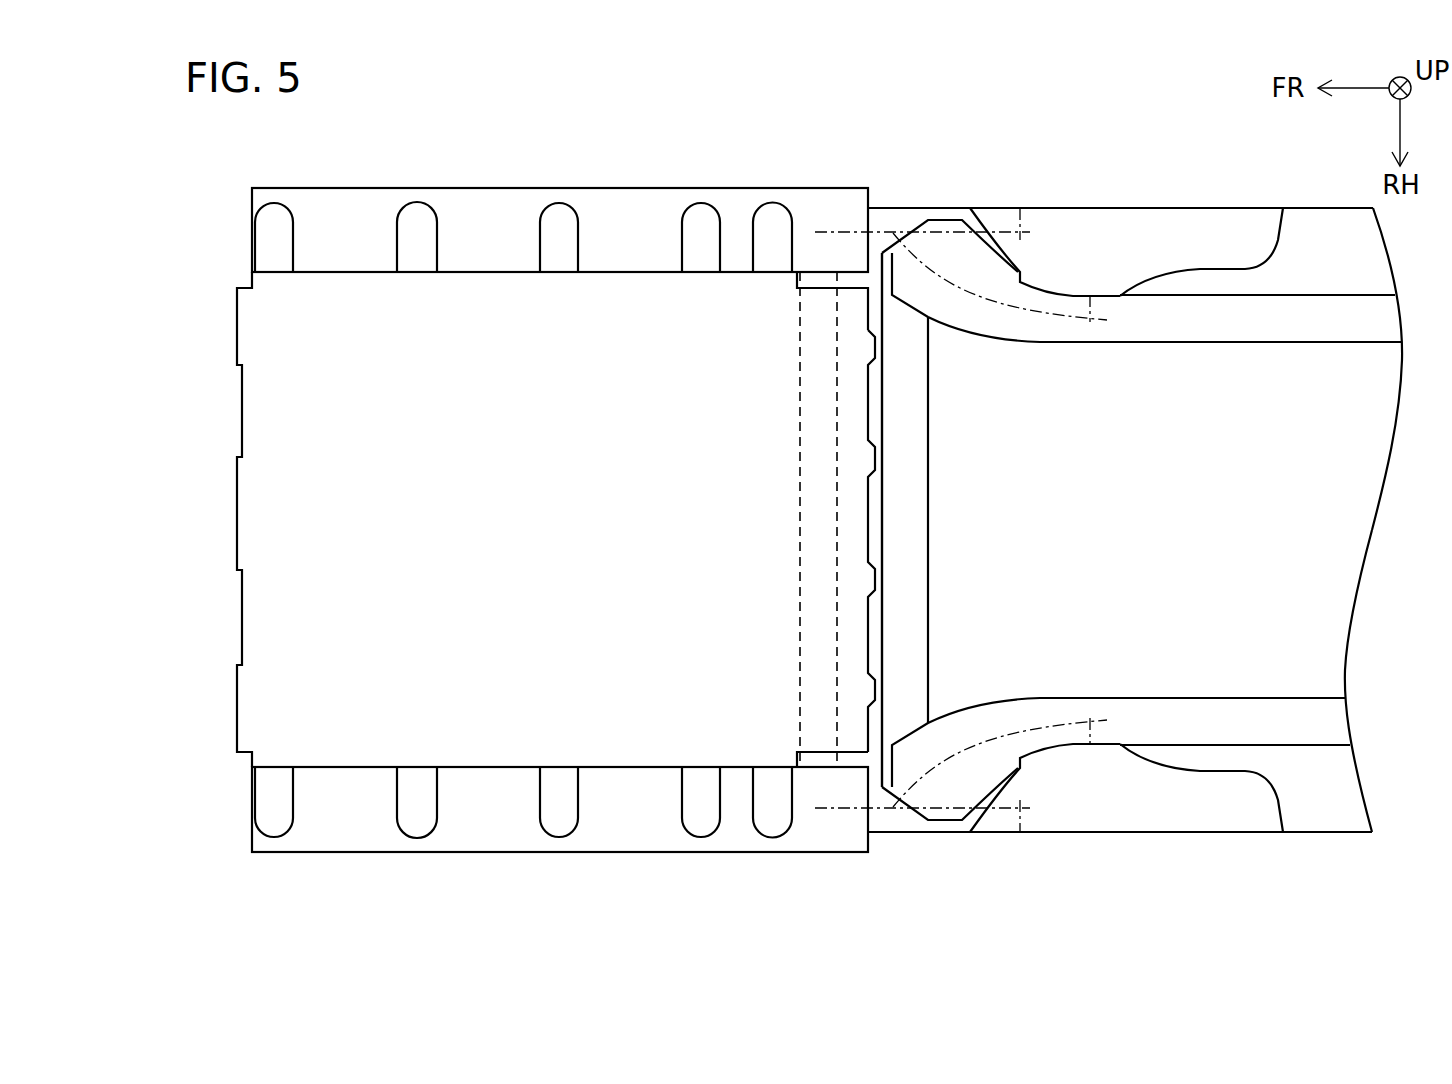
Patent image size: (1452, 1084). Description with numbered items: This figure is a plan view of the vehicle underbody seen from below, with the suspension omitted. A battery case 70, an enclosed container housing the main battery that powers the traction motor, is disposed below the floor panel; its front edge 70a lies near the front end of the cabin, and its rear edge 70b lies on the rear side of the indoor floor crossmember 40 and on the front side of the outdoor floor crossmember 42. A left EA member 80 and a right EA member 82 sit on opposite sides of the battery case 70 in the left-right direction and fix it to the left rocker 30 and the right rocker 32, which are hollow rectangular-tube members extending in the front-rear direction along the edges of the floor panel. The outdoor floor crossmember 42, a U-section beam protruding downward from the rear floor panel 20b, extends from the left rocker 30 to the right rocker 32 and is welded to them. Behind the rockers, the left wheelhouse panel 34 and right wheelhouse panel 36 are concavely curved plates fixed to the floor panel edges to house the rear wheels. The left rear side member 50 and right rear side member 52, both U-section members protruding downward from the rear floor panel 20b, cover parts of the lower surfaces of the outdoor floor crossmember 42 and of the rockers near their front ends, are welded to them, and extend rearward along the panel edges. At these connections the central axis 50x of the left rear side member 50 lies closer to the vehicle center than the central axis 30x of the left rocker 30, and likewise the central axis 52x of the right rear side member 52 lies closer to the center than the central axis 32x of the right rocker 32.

The rear floor panel 20b is at (878, 540).
The left rocker 30 is at (902, 210).
The central axis of the left rocker 30x is at (1018, 212).
The right rocker 32 is at (890, 832).
The central axis of the right rocker 32x is at (1018, 832).
The left wheelhouse panel 34 is at (1065, 237).
The right wheelhouse panel 36 is at (1178, 800).
The indoor floor crossmember 40 is at (822, 523).
The outdoor floor crossmember 42 is at (917, 564).
The left rear side member 50 is at (1192, 313).
The central axis of the left rear side member 50x is at (1093, 292).
The right rear side member 52 is at (1290, 735).
The central axis of the right rear side member 52x is at (1090, 745).
The battery case 70 is at (510, 432).
The front edge of the battery case 70a is at (232, 515).
The rear edge of the battery case 70b is at (878, 355).
The left EA member 80 is at (487, 212).
The right EA member 82 is at (487, 825).